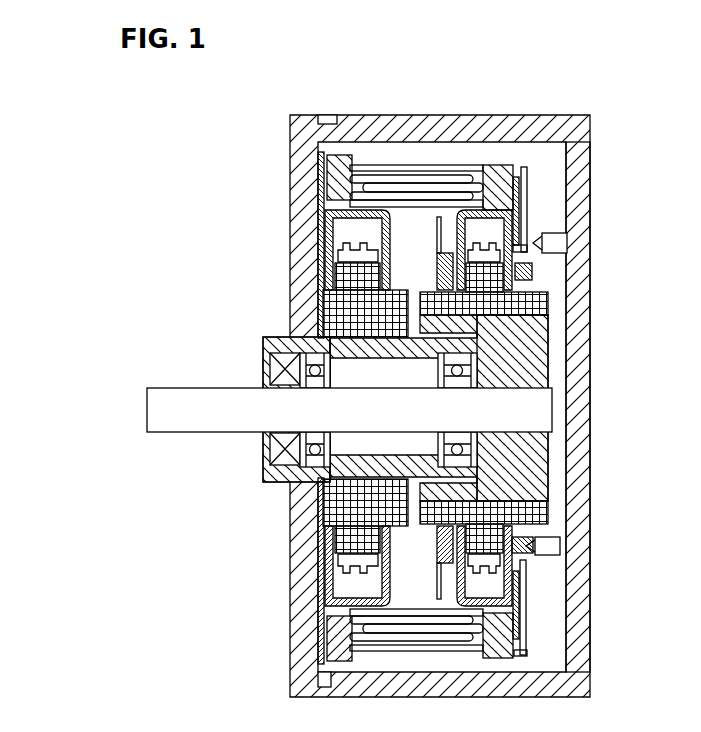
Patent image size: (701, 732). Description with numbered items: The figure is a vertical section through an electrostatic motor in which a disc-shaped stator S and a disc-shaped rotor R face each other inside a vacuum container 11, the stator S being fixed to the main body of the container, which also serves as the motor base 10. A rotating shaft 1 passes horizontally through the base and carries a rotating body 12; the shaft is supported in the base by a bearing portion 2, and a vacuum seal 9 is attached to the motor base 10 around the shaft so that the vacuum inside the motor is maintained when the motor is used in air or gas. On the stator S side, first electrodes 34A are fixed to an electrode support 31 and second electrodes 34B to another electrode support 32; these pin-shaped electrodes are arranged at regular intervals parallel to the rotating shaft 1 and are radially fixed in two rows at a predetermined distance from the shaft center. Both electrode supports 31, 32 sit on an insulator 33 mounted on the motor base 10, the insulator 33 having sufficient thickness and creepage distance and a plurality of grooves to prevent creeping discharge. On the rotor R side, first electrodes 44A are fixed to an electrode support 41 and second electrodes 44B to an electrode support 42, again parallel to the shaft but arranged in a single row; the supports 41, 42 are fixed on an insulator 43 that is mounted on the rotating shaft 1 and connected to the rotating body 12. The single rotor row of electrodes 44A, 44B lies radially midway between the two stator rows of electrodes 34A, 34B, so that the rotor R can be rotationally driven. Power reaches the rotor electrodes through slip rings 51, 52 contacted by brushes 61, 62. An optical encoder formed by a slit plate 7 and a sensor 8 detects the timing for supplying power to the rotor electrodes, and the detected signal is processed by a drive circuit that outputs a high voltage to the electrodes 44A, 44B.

The rotating shaft 1 is at (223, 420).
The bearing holder 2 is at (297, 484).
The slit plate 7 is at (347, 617).
The sensor 8 is at (327, 600).
The vacuum seal 9 is at (300, 463).
The motor base 10 is at (312, 335).
The vacuum container 11 is at (592, 318).
The rotating body 12 is at (545, 360).
The electrode support 31 is at (327, 188).
The electrode support 32 is at (332, 208).
The insulator 33 is at (353, 310).
The first electrode 34A is at (398, 200).
The second electrode 34B is at (410, 618).
The electrode support 41 is at (528, 172).
The electrode support 42 is at (520, 205).
The insulator 43 is at (548, 292).
The first electrode 44A is at (430, 185).
The second electrode 44B is at (440, 633).
The slip ring 51 is at (527, 567).
The slip ring 52 is at (533, 532).
The brush 61 is at (555, 242).
The brush 62 is at (553, 548).
The rotor R is at (572, 472).
The stator S is at (303, 540).